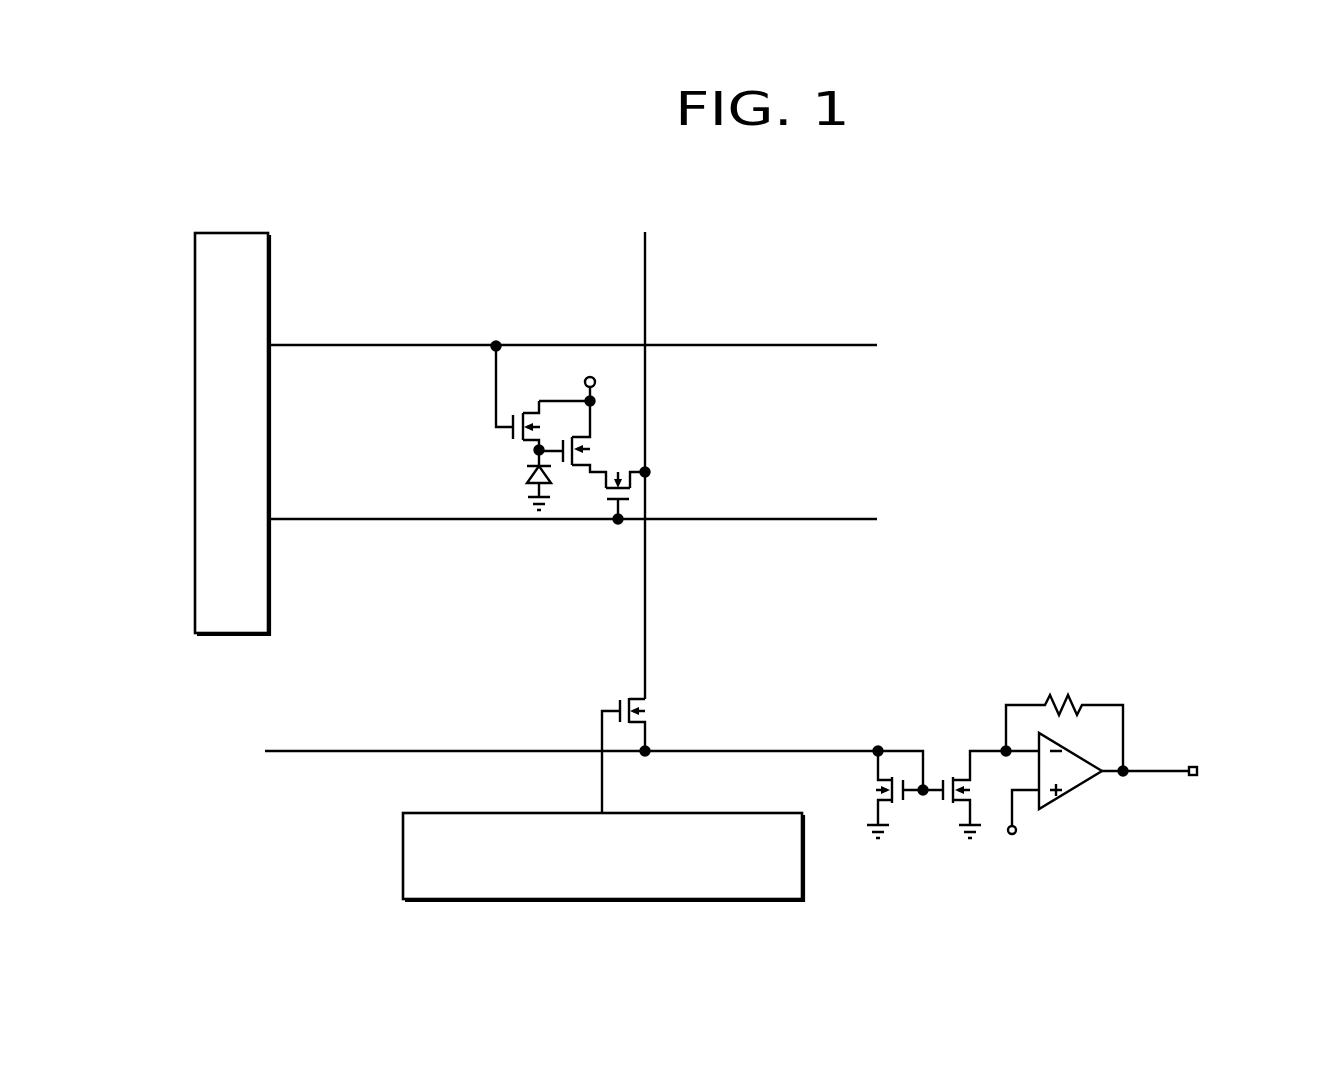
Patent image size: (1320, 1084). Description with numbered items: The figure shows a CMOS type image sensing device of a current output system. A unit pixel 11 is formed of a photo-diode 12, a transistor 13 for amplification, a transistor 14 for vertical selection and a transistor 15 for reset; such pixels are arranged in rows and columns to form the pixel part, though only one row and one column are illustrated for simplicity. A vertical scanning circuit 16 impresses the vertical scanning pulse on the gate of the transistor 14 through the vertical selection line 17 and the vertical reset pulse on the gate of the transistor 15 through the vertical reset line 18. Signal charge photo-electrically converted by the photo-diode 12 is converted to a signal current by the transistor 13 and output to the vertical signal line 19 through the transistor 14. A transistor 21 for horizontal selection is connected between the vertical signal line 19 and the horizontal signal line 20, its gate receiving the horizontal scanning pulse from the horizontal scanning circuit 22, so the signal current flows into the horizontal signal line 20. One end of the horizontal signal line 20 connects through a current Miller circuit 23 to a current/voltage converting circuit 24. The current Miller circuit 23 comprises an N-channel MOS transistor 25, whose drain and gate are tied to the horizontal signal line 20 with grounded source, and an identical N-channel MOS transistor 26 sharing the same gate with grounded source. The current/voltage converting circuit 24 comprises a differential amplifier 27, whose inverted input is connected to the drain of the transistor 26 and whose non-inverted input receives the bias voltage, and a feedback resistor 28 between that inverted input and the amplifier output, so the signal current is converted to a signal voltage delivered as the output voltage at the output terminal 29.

The unit pixel 11 is at (686, 300).
The photo-diode 12 is at (527, 478).
The transistor for amplification 13 is at (590, 438).
The transistor for vertical selection 14 is at (634, 473).
The transistor for reset 15 is at (527, 413).
The vertical scanning circuit 16 is at (233, 233).
The vertical selection line 17 is at (683, 521).
The vertical reset line 18 is at (680, 346).
The vertical signal line 19 is at (648, 616).
The horizontal signal line 20 is at (425, 750).
The transistor for horizontal selection 21 is at (649, 703).
The horizontal scanning circuit 22 is at (427, 900).
The current Miller circuit 23 is at (864, 850).
The current/voltage converting circuit 24 is at (1116, 676).
The N-channel MOS transistor 25 is at (885, 782).
The N-channel MOS transistor 26 is at (958, 805).
The differential amplifier 27 is at (1070, 775).
The feedback resistor 28 is at (1068, 700).
The output terminal 29 is at (1198, 760).